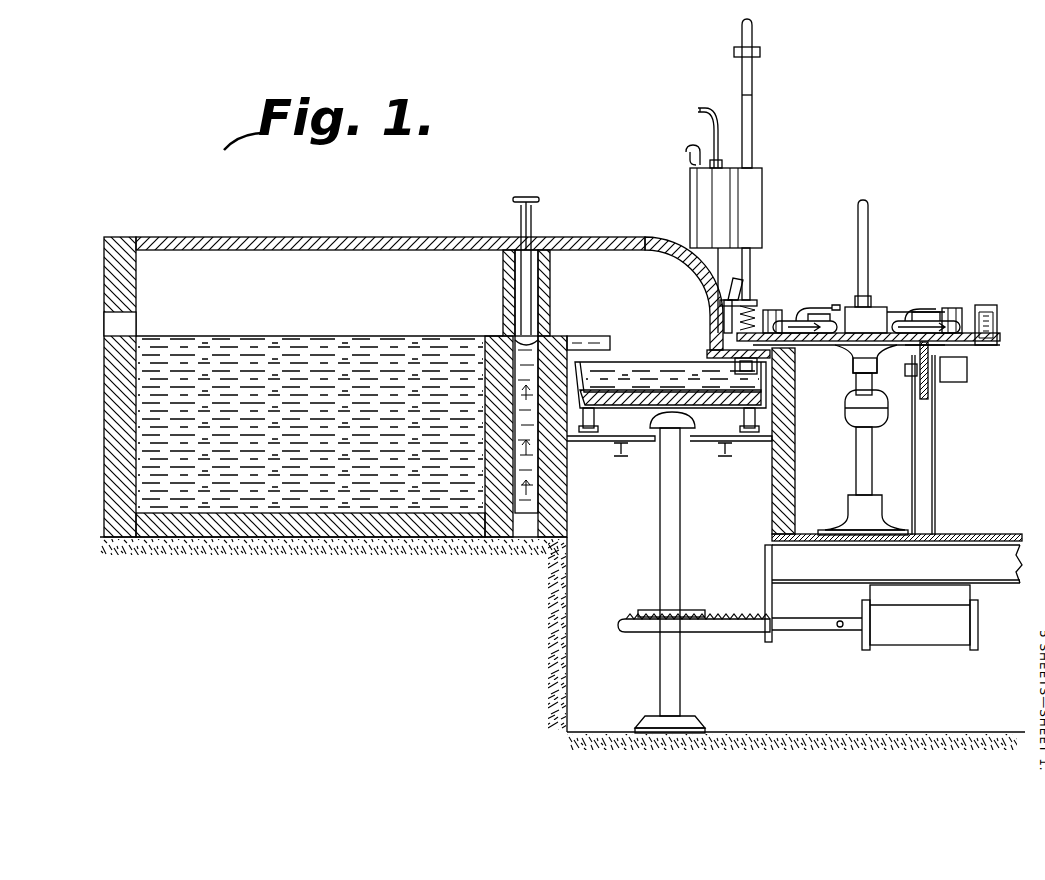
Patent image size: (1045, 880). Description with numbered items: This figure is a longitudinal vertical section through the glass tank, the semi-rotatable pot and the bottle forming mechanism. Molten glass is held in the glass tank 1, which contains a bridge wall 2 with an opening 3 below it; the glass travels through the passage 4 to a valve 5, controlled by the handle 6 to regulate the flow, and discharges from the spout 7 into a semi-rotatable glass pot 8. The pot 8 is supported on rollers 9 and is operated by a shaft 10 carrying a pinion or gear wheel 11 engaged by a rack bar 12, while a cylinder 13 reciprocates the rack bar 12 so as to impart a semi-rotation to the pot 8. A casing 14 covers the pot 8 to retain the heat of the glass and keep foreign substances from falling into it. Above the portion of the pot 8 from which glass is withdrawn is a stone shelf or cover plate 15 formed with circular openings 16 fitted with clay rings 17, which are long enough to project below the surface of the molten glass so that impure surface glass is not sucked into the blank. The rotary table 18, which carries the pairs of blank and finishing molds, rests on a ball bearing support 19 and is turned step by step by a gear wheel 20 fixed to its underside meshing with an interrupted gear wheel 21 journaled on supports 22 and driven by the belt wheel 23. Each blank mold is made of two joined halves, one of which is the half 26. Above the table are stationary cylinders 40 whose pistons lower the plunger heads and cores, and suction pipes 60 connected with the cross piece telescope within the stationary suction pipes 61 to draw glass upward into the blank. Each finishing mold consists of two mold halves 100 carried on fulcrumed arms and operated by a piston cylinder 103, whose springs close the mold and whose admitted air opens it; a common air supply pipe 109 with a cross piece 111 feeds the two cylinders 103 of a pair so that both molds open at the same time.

The glass tank 1 is at (150, 418).
The bridge wall 2 is at (495, 340).
The opening 3 is at (496, 500).
The passage 4 is at (500, 352).
The valve 5 is at (545, 340).
The handle 6 is at (512, 201).
The spout 7 is at (601, 336).
The semi-rotatable glass pot 8 is at (631, 372).
The rollers 9 is at (586, 433).
The shaft 10 is at (662, 520).
The pinion or gear wheel 11 is at (688, 611).
The rack bar 12 is at (736, 628).
The cylinder 13 is at (933, 638).
The casing 14 is at (637, 238).
The stone shelf or cover plate 15 is at (712, 352).
The circular openings 16 is at (745, 375).
The rings 17 is at (788, 420).
The rotary table 18 is at (807, 346).
The ball bearing support 19 is at (848, 405).
The gear wheel 20 is at (935, 346).
The gear wheel 21 is at (928, 392).
The supports 22 is at (915, 466).
The belt wheel 23 is at (957, 371).
The blank mold half 26 is at (990, 325).
The cylinders 40 is at (756, 222).
The suction pipes 60 is at (753, 278).
The suction pipes 61 is at (753, 120).
The mold halves 100 is at (966, 315).
The piston cylinder 103 is at (936, 322).
The air supply pipe 109 is at (830, 290).
The cross piece 111 is at (793, 315).